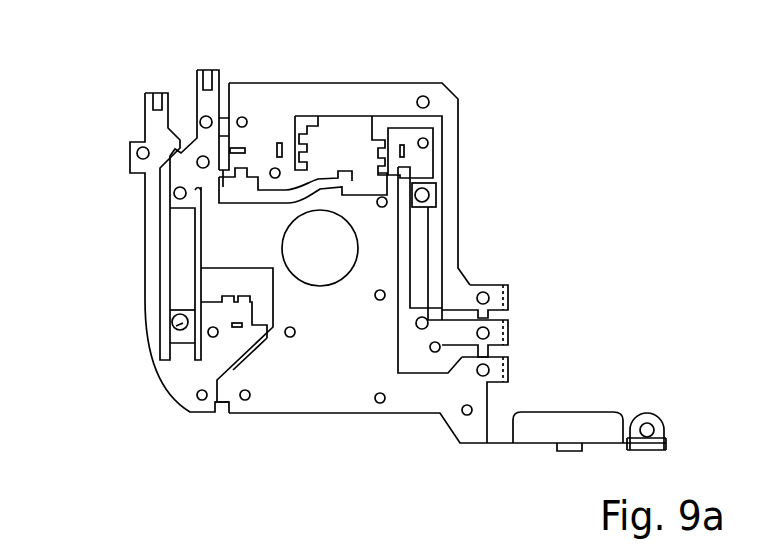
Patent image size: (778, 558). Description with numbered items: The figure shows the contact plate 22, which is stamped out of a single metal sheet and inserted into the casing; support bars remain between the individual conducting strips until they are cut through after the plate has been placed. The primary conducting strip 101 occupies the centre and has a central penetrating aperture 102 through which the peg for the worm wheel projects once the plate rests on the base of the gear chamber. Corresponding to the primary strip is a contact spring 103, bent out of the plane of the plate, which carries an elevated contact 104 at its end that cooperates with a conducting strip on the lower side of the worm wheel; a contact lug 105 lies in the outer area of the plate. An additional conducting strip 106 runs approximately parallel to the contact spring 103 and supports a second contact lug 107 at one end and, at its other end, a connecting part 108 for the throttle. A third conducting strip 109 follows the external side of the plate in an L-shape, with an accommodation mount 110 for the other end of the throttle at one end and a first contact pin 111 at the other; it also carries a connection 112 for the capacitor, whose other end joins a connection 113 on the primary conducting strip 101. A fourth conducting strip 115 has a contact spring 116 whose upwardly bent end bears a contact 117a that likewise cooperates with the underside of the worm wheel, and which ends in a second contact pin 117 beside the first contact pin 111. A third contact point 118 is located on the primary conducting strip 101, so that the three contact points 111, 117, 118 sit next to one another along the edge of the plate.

The contact plate 22 is at (482, 104).
The primary conducting strip 101 is at (347, 372).
The central penetrating aperture 102 is at (321, 216).
The contact spring 103 is at (175, 252).
The elevated contact 104 is at (172, 320).
The contact lug 105 is at (207, 67).
The additional conducting strip 106 is at (168, 370).
The second contact lug 107 is at (155, 92).
The connecting part 108 is at (237, 298).
The third conducting strip 109 is at (452, 153).
The accommodation mount 110 is at (218, 183).
The first contact pin 111 is at (510, 292).
The connection for the capacitor 112 is at (313, 133).
The connection on the primary conducting strip 113 is at (373, 130).
The fourth conducting strip 115 is at (422, 357).
The contact spring 116 is at (428, 243).
The second contact pin 117 is at (510, 331).
The contact 117a is at (429, 193).
The third contact point 118 is at (510, 373).